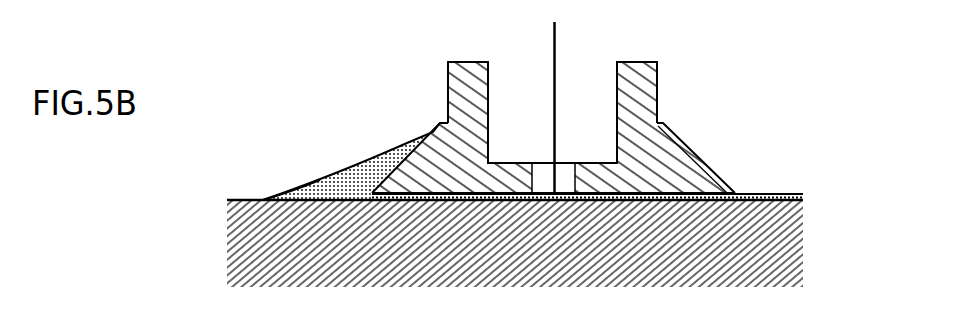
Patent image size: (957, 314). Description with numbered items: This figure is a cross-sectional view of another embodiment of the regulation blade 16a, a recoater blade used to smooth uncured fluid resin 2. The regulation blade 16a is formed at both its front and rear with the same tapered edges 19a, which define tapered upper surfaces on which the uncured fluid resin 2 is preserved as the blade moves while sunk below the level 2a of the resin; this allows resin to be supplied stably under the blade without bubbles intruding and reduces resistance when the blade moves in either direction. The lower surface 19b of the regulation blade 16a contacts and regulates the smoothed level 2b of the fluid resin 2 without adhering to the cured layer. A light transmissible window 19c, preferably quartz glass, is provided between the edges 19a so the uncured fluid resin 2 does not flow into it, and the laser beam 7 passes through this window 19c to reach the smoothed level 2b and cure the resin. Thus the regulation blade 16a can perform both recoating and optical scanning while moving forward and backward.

The regulation blade 16a is at (450, 87).
The laser beam 7 is at (552, 58).
The light transmissible window 19c is at (559, 165).
The level of the uncured fluid resin 2a is at (292, 188).
The uncured fluid resin 2 is at (368, 167).
The smoothed level 2b is at (541, 183).
The tapered edge portion 19a is at (405, 175).
The lower surface 19b is at (474, 196).